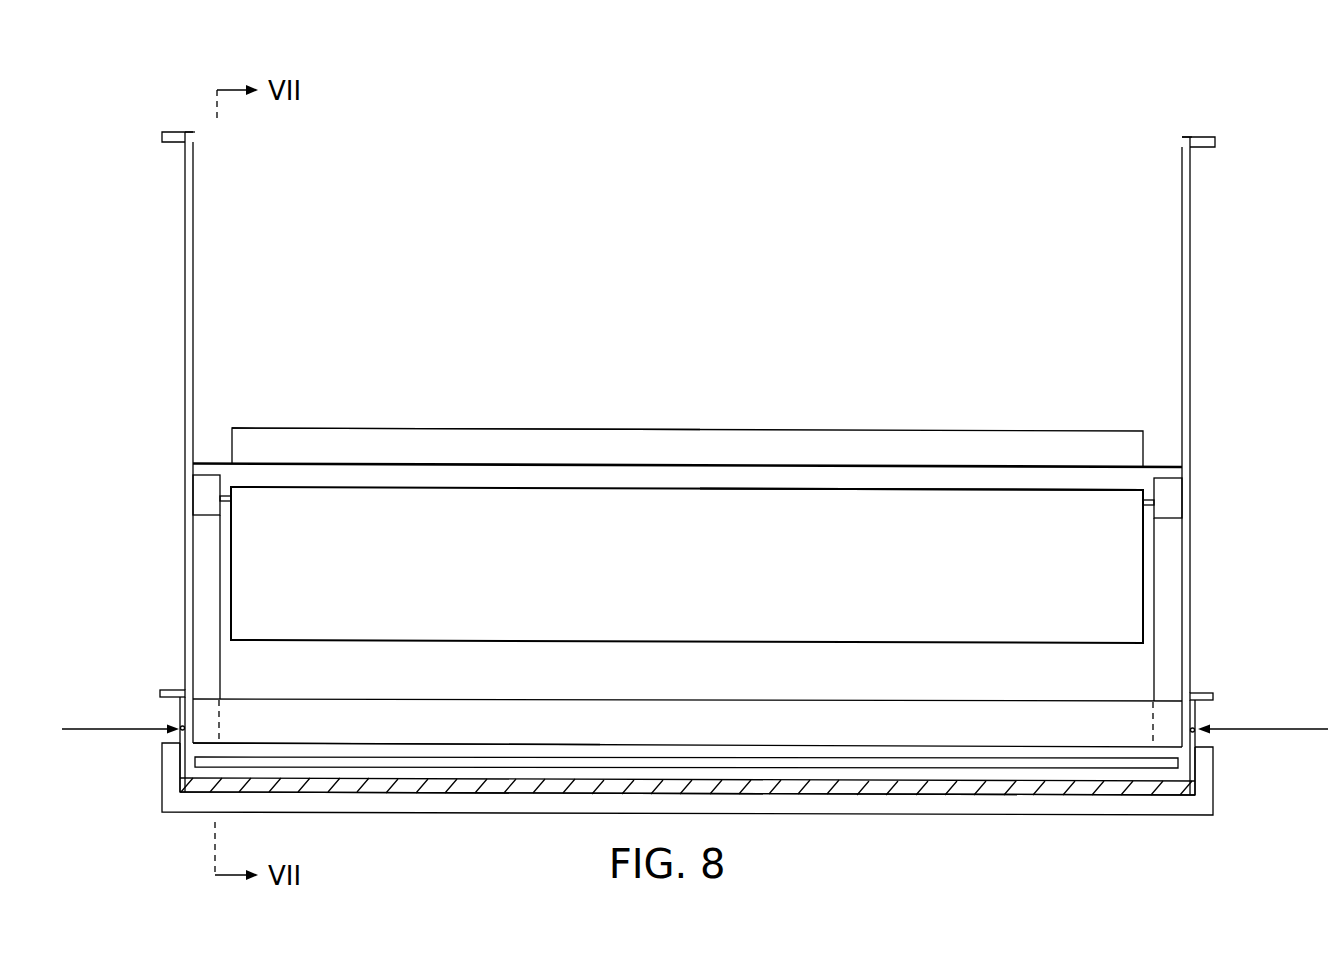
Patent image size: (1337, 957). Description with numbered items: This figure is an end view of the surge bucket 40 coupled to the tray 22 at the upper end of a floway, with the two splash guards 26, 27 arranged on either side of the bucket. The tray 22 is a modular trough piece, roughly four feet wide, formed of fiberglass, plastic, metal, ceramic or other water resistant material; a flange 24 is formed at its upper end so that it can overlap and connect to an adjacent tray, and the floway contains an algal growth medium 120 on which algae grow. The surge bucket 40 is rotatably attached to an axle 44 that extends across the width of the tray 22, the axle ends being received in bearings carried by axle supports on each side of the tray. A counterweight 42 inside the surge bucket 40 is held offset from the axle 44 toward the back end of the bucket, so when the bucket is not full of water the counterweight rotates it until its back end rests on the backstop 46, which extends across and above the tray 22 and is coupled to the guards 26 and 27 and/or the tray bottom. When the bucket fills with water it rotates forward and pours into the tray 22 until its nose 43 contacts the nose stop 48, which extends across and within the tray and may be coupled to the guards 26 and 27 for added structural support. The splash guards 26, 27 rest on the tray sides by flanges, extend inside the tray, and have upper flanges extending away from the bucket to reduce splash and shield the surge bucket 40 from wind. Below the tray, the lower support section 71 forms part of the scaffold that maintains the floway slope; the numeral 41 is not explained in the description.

The tray 22 is at (338, 793).
The flange 24 is at (1128, 800).
The splash guard 26 is at (1192, 285).
The splash guard 27 is at (185, 283).
The surge bucket 40 is at (616, 445).
The inner panel edge 41 is at (993, 503).
The counterweight 42 is at (475, 445).
The nose 43 is at (652, 490).
The axle 44 is at (838, 477).
The backstop 46 is at (987, 712).
The nose stop 48 is at (287, 735).
The lower support section 71 is at (1213, 775).
The algal growth medium 120 is at (1178, 765).